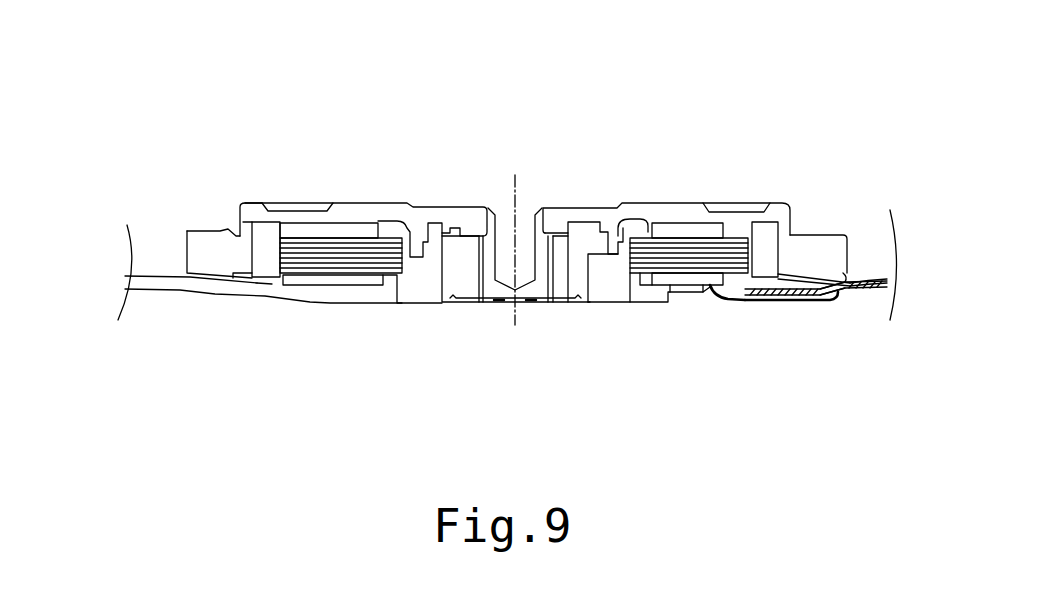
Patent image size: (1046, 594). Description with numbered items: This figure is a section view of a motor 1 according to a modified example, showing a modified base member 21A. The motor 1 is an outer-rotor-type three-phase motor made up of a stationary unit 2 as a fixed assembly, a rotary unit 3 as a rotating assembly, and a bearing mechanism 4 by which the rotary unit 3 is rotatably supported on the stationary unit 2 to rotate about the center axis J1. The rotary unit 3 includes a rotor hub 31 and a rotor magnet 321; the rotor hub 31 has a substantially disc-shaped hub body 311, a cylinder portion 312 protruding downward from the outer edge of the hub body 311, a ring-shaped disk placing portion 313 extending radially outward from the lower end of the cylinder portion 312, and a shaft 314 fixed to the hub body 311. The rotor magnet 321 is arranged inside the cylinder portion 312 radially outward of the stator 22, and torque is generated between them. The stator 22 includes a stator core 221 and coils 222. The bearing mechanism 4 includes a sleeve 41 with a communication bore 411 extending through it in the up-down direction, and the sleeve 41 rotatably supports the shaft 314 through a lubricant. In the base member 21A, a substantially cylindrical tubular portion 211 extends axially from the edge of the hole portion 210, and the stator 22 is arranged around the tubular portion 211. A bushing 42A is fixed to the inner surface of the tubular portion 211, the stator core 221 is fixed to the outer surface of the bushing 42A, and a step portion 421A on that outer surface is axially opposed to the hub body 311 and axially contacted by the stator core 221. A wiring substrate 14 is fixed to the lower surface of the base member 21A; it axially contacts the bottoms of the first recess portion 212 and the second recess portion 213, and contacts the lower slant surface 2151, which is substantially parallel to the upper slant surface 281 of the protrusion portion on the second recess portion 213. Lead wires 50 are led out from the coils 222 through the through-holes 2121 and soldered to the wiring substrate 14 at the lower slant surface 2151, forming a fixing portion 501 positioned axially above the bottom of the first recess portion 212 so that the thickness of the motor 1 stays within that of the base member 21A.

The motor 1 is at (132, 117).
The stationary unit 2 is at (333, 392).
The rotary unit 3 is at (411, 183).
The bearing mechanism 4 is at (476, 354).
The wiring substrate 14 is at (881, 297).
The base member 21A is at (162, 280).
The stator 22 is at (653, 214).
The rotor hub 31 is at (377, 204).
The sleeve 41 is at (455, 222).
The lead wires 50 is at (728, 301).
The bushing 42A is at (603, 284).
The center axis J1 is at (524, 186).
The hole portion 210 is at (632, 303).
The tubular portion 211 is at (392, 278).
The first recess portion 212 is at (348, 283).
The second recess portion 213 is at (272, 284).
The stator core 221 is at (305, 218).
The coils 222 is at (366, 281).
The upper slant surface 281 is at (842, 279).
The hub body 311 is at (681, 204).
The cylinder portion 312 is at (238, 227).
The disk placing portion 313 is at (208, 230).
The shaft 314 is at (491, 208).
The rotor magnet 321 is at (260, 258).
The communication bore 411 is at (564, 245).
The step portion 421A is at (633, 228).
The fixing portion 501 is at (837, 294).
The through-holes 2121 is at (686, 297).
The lower slant surface 2151 is at (822, 277).